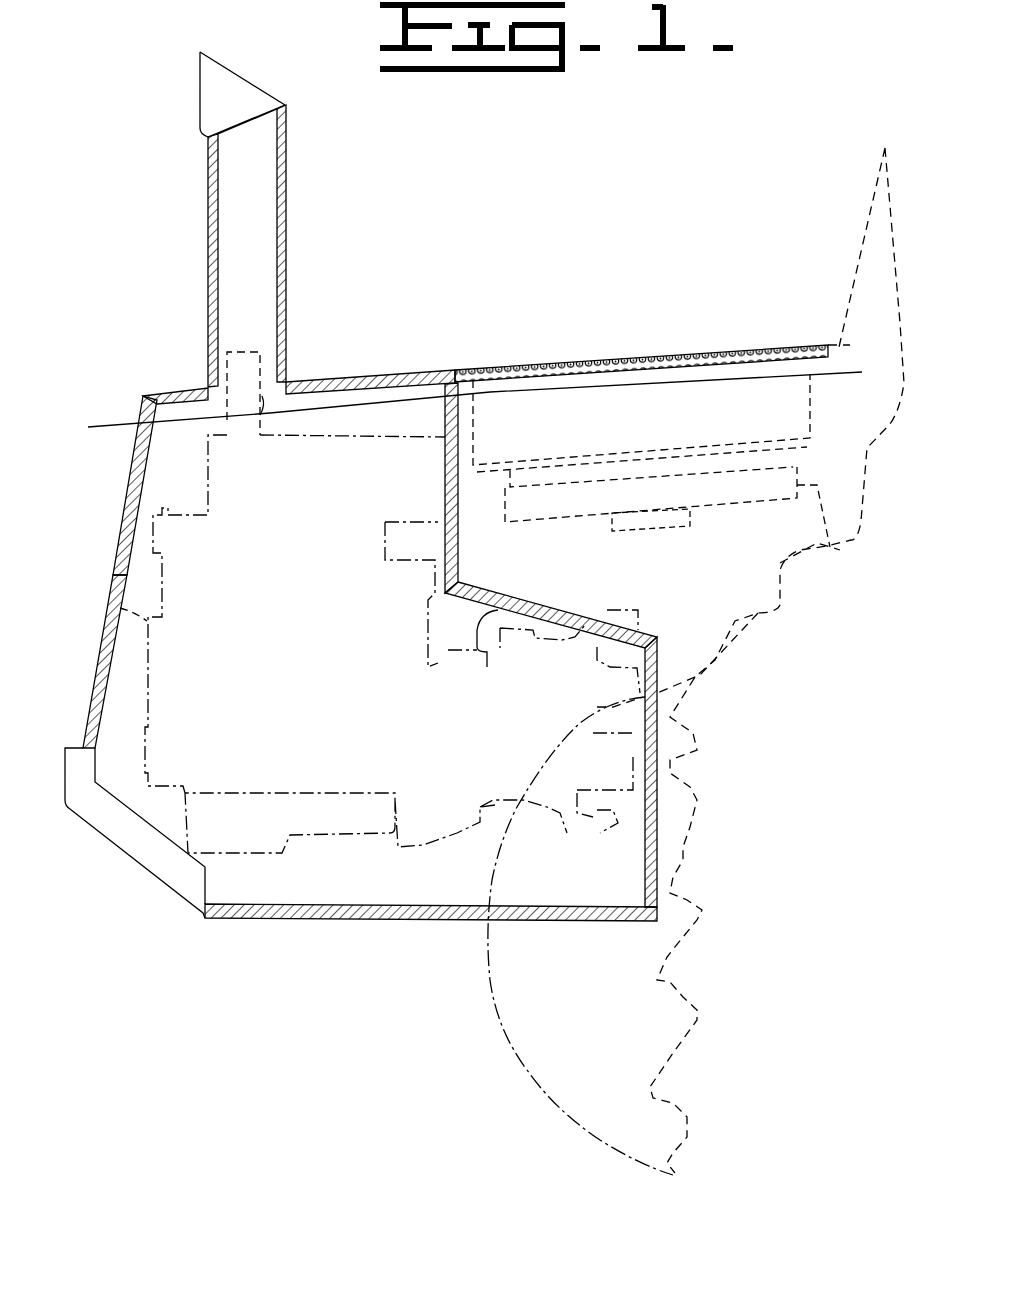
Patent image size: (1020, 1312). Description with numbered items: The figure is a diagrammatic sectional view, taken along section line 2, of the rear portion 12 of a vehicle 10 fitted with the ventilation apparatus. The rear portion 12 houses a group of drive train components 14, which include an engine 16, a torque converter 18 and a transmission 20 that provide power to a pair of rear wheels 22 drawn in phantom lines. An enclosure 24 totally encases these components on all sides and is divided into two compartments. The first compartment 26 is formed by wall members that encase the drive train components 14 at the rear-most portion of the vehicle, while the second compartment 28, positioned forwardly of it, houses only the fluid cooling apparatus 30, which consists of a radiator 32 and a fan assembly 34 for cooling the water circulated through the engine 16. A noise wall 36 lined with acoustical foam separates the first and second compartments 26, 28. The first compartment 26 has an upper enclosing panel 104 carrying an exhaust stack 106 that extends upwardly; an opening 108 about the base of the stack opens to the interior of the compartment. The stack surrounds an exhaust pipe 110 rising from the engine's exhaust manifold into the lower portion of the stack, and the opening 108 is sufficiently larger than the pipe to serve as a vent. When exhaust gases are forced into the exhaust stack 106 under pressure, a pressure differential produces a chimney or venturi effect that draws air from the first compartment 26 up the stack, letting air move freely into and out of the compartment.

The section line 2- 2 is at (90, 458).
The vehicle 10 is at (809, 275).
The rear portion 12 is at (659, 278).
The drive train components 14 is at (288, 878).
The engine 16 is at (110, 597).
The torque converter 18 is at (405, 842).
The transmission 20 is at (497, 798).
The rear wheels 22 is at (527, 1080).
The enclosure 24 is at (493, 306).
The first compartment 26 is at (128, 495).
The second compartment 28 is at (697, 352).
The fluid cooling apparatus 30 is at (704, 531).
The radiator 32 is at (828, 548).
The fan assembly 34 is at (587, 518).
The noise wall 36 is at (487, 667).
The upper enclosing panel 104 is at (388, 380).
The exhaust stack 106 is at (208, 222).
The opening 108 is at (262, 396).
The exhaust pipe 110 is at (205, 378).